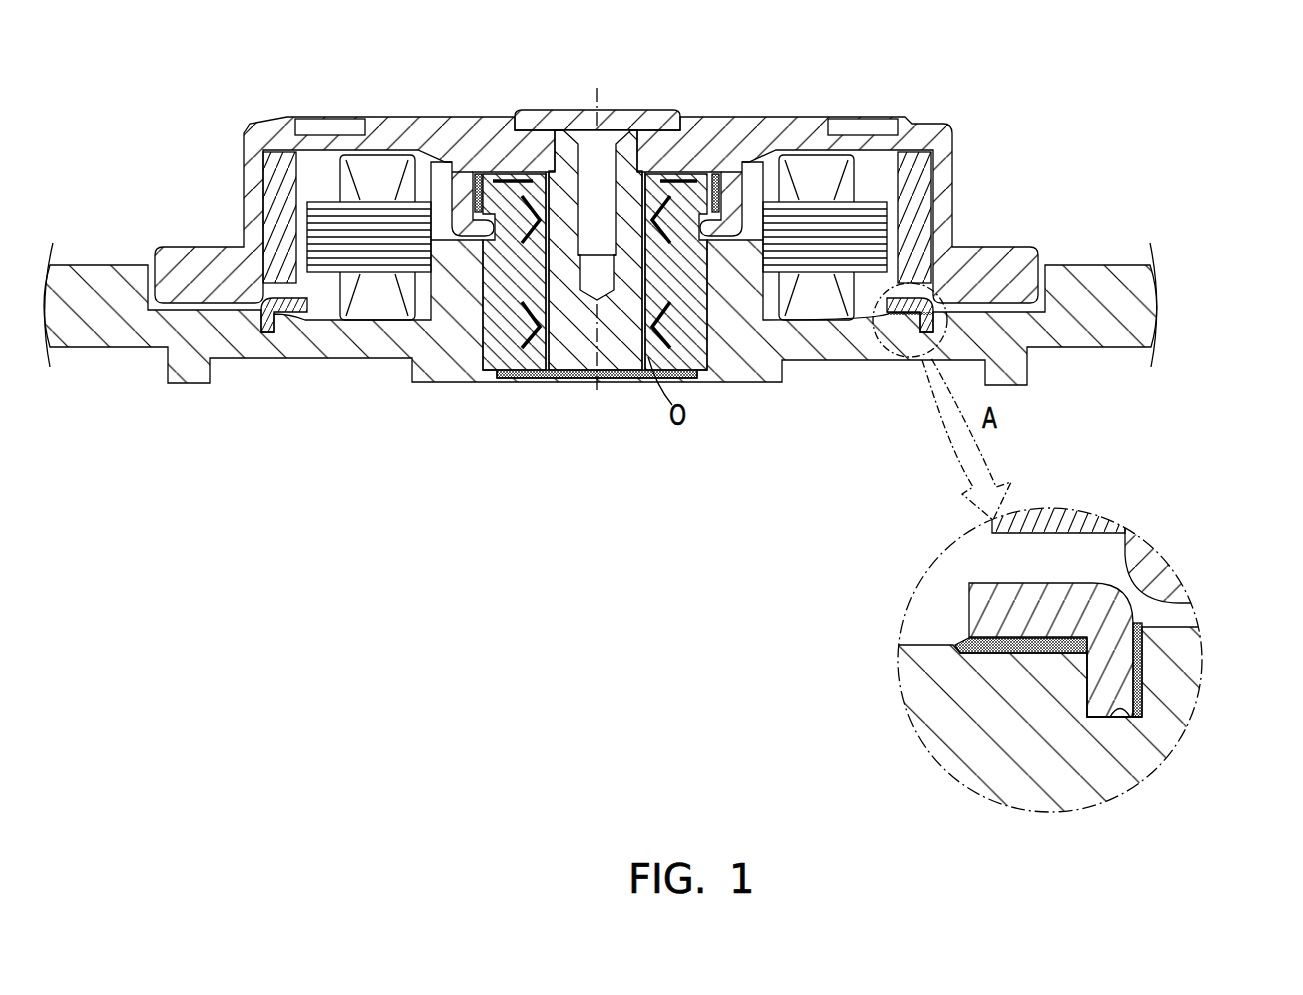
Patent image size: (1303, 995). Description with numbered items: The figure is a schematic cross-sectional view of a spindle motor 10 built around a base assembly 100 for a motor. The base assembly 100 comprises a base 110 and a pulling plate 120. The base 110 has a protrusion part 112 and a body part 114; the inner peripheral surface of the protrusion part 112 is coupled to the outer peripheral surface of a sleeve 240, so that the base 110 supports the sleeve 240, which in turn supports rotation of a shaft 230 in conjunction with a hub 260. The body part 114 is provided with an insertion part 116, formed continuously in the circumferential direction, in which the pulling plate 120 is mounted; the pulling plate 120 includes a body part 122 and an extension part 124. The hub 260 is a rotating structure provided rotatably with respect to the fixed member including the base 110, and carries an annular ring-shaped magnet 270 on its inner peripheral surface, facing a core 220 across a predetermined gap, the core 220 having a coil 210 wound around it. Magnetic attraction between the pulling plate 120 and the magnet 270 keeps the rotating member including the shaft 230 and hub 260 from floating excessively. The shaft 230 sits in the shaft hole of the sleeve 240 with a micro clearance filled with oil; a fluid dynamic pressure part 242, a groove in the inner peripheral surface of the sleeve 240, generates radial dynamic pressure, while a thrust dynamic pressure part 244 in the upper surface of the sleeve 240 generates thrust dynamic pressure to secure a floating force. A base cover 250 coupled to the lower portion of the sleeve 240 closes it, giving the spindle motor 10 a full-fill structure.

The spindle motor 10 is at (615, 32).
The base assembly 100 is at (884, 502).
The base 110 is at (842, 458).
The protrusion part 112 is at (742, 317).
The body part 114 is at (863, 343).
The insertion part 116 is at (1128, 705).
The pulling plate 120 is at (903, 323).
The body part 122 is at (1035, 628).
The extension part 124 is at (1143, 670).
The coil 210 is at (373, 303).
The core 220 is at (403, 250).
The shaft 230 is at (624, 353).
The sleeve 240 is at (505, 353).
The fluid dynamic pressure part 242 is at (645, 157).
The thrust dynamic pressure part 244 is at (710, 158).
The base cover 250 is at (562, 353).
The hub 260 is at (945, 141).
The magnet 270 is at (915, 216).